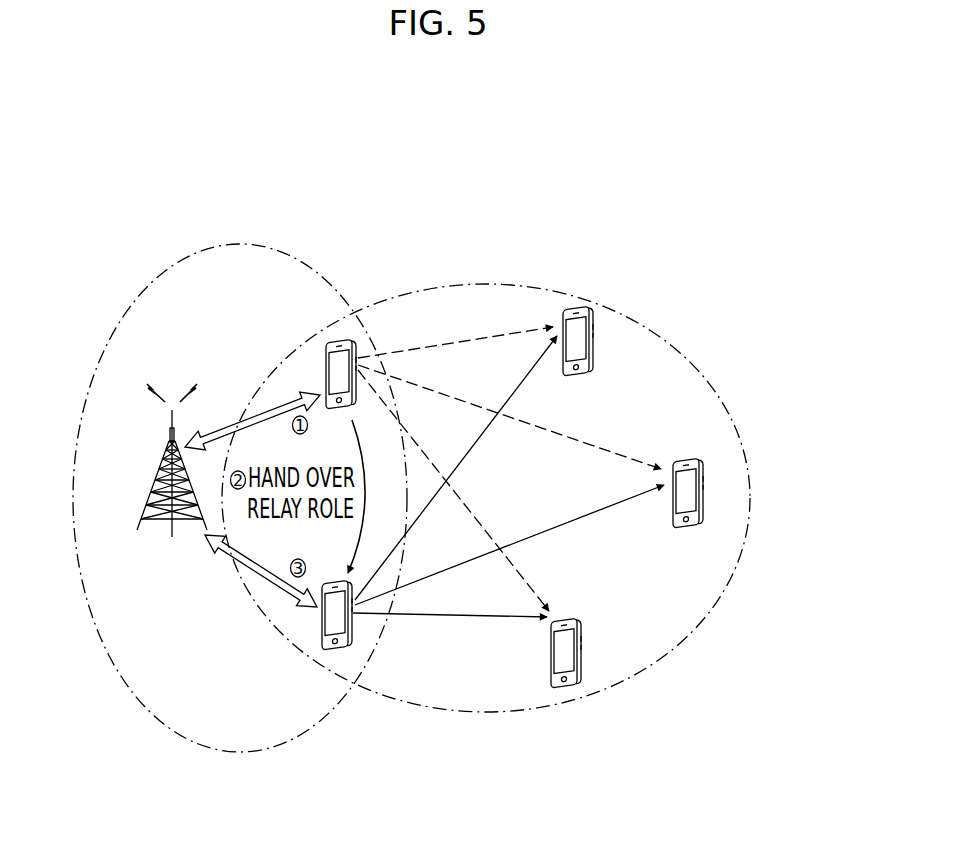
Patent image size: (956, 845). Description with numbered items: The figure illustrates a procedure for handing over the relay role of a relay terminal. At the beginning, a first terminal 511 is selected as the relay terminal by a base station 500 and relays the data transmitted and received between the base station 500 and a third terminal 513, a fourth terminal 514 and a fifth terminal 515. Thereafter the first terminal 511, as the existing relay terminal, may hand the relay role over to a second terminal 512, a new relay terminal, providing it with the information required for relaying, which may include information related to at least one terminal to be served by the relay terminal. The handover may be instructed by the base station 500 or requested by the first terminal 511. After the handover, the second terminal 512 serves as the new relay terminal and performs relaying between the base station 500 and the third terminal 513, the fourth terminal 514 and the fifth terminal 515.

The BS 500 is at (163, 470).
The terminal 1 511 is at (342, 337).
The terminal 2 512 is at (350, 652).
The terminal 3 513 is at (582, 306).
The terminal 4 514 is at (700, 530).
The terminal 5 515 is at (573, 690).